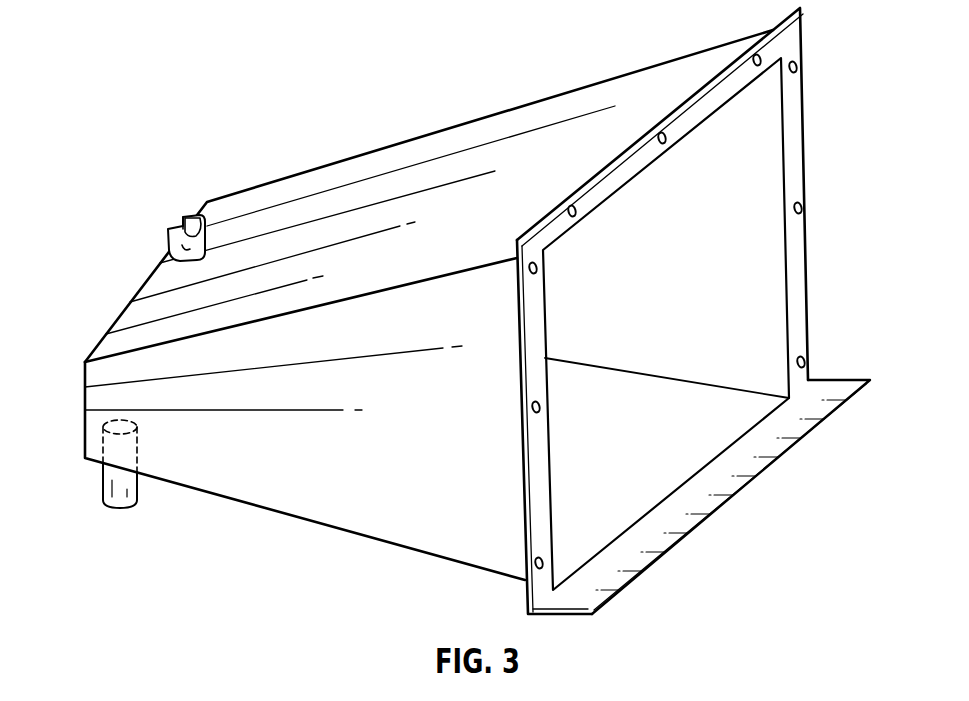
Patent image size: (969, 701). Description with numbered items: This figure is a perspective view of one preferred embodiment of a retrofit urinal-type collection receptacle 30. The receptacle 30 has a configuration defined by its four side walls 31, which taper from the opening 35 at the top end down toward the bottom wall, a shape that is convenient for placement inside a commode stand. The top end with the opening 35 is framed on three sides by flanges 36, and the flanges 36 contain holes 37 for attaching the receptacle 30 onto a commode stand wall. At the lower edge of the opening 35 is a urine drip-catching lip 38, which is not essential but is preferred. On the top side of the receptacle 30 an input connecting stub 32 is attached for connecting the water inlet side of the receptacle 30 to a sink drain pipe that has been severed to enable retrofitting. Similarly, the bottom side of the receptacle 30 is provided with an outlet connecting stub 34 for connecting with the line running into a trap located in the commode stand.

The retrofit urinal-type collection receptacle 30 is at (249, 504).
The side walls 31 is at (386, 293).
The input connecting stub 32 is at (178, 250).
The outlet connecting stub 34 is at (118, 484).
The opening 35 is at (675, 443).
The flanges 36 is at (793, 100).
The holes 37 is at (805, 208).
The urine drip-catching lip 38 is at (790, 426).